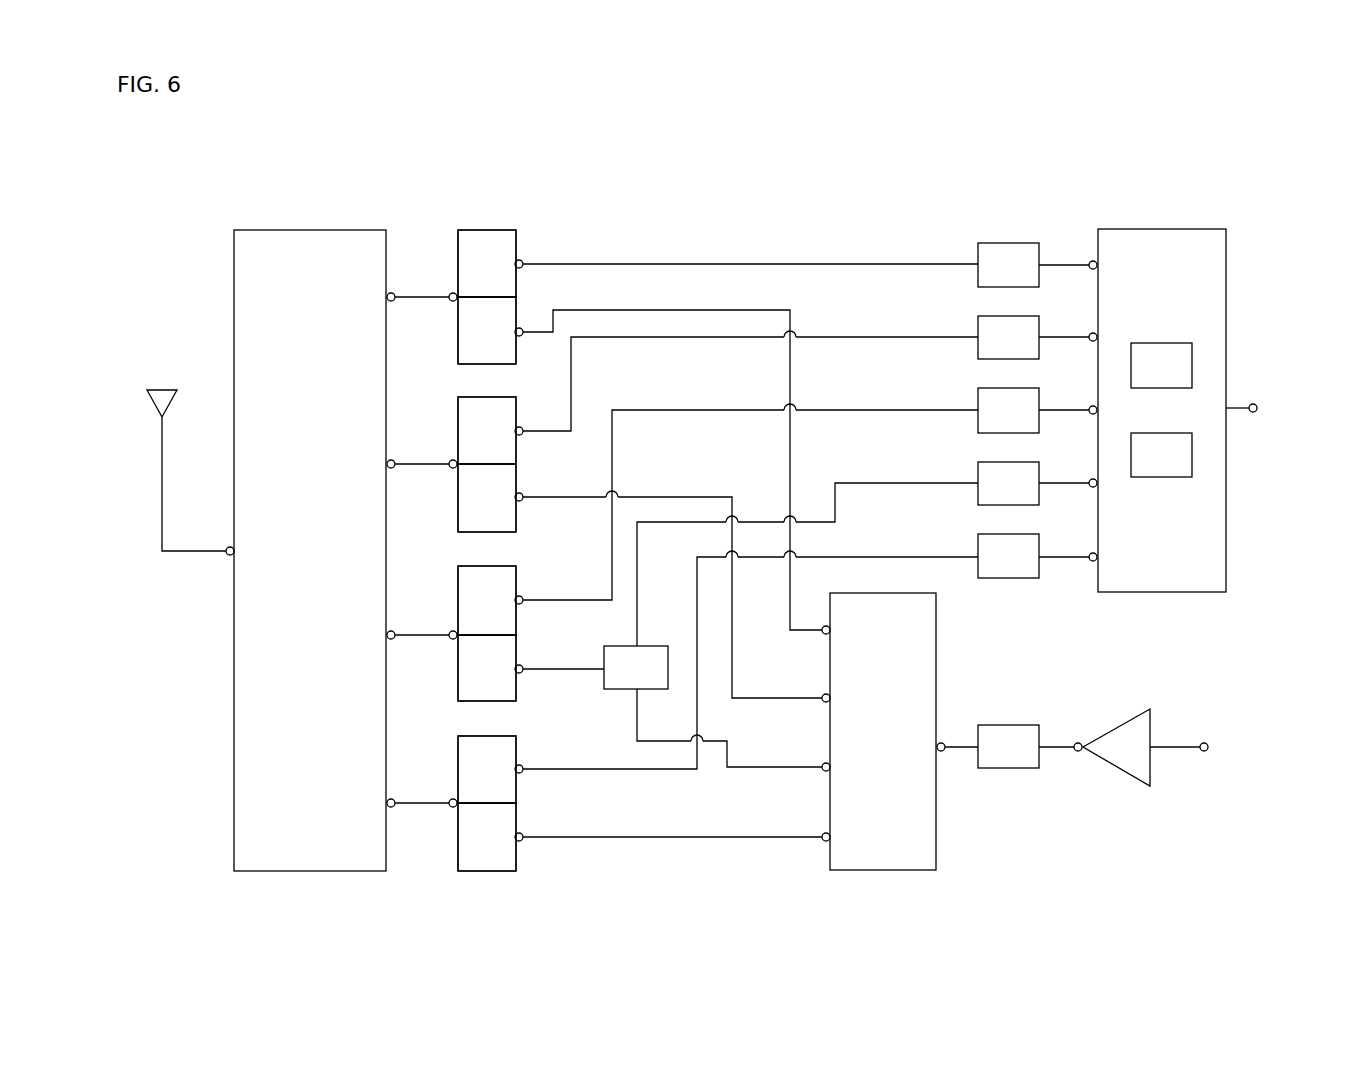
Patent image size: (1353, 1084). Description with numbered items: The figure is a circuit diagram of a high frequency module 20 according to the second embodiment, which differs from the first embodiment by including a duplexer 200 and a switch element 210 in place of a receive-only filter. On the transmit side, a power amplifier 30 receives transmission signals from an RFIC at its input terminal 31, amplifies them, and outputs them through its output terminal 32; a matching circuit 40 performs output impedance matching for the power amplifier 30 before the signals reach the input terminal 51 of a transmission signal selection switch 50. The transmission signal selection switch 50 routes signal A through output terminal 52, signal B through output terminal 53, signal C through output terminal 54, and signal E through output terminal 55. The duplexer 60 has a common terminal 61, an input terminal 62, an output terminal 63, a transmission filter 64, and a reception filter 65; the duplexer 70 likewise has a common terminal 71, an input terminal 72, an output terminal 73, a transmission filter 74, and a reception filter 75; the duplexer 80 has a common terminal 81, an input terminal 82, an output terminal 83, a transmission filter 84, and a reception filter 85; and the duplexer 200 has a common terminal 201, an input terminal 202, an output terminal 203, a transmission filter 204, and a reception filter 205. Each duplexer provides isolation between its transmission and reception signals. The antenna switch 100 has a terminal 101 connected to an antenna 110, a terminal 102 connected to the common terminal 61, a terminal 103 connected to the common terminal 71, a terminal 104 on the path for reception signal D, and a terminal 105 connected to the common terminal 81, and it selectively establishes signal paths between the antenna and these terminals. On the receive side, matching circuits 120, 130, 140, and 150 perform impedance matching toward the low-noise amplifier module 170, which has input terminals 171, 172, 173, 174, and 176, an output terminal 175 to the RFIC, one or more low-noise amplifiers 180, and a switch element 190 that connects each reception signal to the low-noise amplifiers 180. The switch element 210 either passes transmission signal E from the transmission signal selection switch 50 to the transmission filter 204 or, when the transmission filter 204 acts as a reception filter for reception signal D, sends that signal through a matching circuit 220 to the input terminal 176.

The high frequency module 20 is at (897, 184).
The antenna switch 100 is at (323, 247).
The antenna 110 is at (163, 454).
The terminal 101 is at (226, 556).
The terminal 102 is at (393, 301).
The terminal 103 is at (393, 468).
The terminal 104 is at (393, 639).
The terminal 105 is at (393, 807).
The duplexer 60 is at (494, 228).
The common terminal 61 is at (452, 293).
The input terminal 62 is at (522, 336).
The output terminal 63 is at (522, 262).
The transmission filter 64 is at (467, 341).
The reception filter 65 is at (473, 251).
The duplexer 70 is at (488, 392).
The common terminal 71 is at (452, 460).
The input terminal 72 is at (522, 501).
The output terminal 73 is at (522, 429).
The transmission filter 74 is at (467, 508).
The reception filter 75 is at (473, 418).
The duplexer 200 is at (488, 562).
The common terminal 201 is at (452, 631).
The input terminal 202 is at (522, 673).
The output terminal 203 is at (522, 598).
The transmission filter 204 is at (467, 677).
The reception filter 205 is at (473, 588).
The duplexer 80 is at (488, 733).
The common terminal 81 is at (452, 799).
The input terminal 82 is at (522, 841).
The output terminal 83 is at (522, 773).
The transmission filter 84 is at (467, 845).
The reception filter 85 is at (473, 757).
The switch element 210 is at (791, 625).
The transmission signal selection switch 50 is at (890, 858).
The input terminal 51 is at (943, 743).
The output terminal 52 is at (825, 626).
The output terminal 53 is at (825, 694).
The output terminal 54 is at (825, 833).
The output terminal 55 is at (825, 763).
The matching circuit 40 is at (1020, 723).
The power amplifier 30 is at (1120, 709).
The input terminal 31 is at (1206, 743).
The output terminal 32 is at (1077, 752).
The matching circuit 120 is at (975, 252).
The matching circuit 130 is at (975, 324).
The matching circuit 140 is at (975, 397).
The matching circuit 150 is at (975, 543).
The matching circuit 220 is at (975, 470).
The low-noise amplifier module 170 is at (1190, 228).
The input terminal 171 is at (1090, 262).
The input terminal 172 is at (1090, 334).
The input terminal 173 is at (1090, 407).
The input terminal 174 is at (1090, 554).
The input terminal 176 is at (1090, 480).
The output terminal 175 is at (1256, 404).
The low-noise amplifier 180 is at (1163, 342).
The switch element 190 is at (1163, 479).